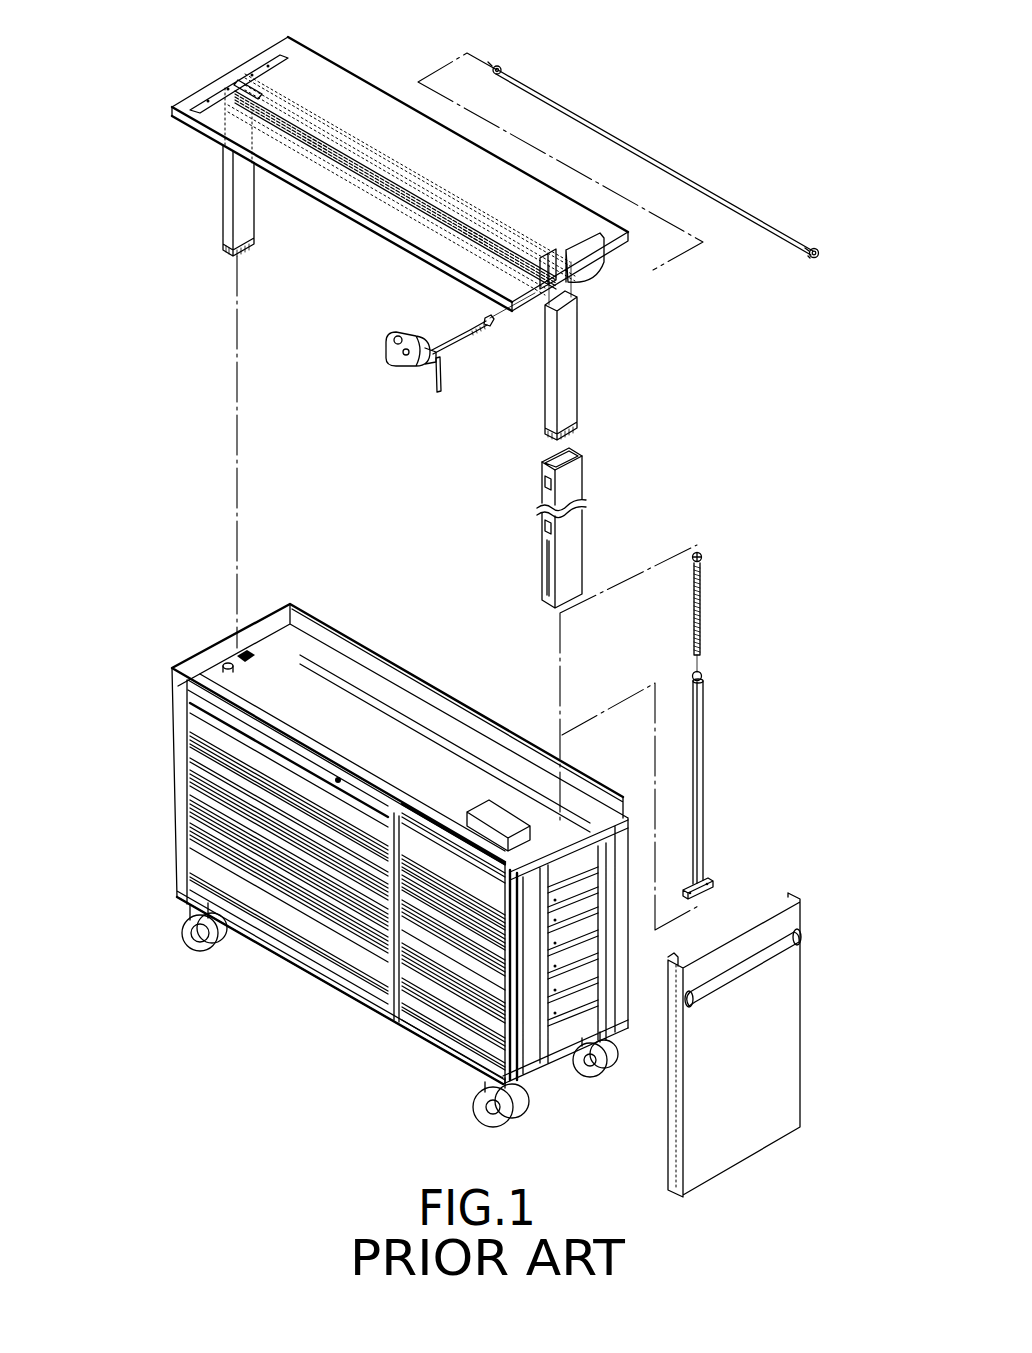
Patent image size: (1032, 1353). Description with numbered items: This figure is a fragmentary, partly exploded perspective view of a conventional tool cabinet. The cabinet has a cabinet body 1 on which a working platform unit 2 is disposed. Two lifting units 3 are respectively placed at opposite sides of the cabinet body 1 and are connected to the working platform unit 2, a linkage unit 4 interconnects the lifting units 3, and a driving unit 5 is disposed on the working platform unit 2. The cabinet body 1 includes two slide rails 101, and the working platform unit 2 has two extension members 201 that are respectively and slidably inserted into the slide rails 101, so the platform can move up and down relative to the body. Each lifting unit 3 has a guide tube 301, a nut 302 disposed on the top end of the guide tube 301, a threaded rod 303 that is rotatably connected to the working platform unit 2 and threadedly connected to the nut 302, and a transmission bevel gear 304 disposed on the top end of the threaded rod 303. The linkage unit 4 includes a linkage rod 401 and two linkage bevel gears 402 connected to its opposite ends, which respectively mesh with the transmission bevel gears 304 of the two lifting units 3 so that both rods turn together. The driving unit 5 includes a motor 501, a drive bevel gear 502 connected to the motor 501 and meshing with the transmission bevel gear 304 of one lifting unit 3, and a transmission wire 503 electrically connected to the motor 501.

The cabinet body 1 is at (154, 822).
The slide rail 101 is at (576, 484).
The working platform unit 2 is at (210, 70).
The extension member 201 is at (222, 184).
The lifting unit 3 is at (712, 752).
The guide tube 301 is at (703, 822).
The nut 302 is at (703, 675).
The threaded rod 303 is at (703, 600).
The transmission bevel gear 304 is at (703, 557).
The linkage unit 4 is at (670, 160).
The linkage rod 401 is at (574, 110).
The linkage bevel gear 402 is at (497, 66).
The driving unit 5 is at (384, 374).
The motor 501 is at (386, 344).
The drive bevel gear 502 is at (488, 328).
The transmission wire 503 is at (437, 380).